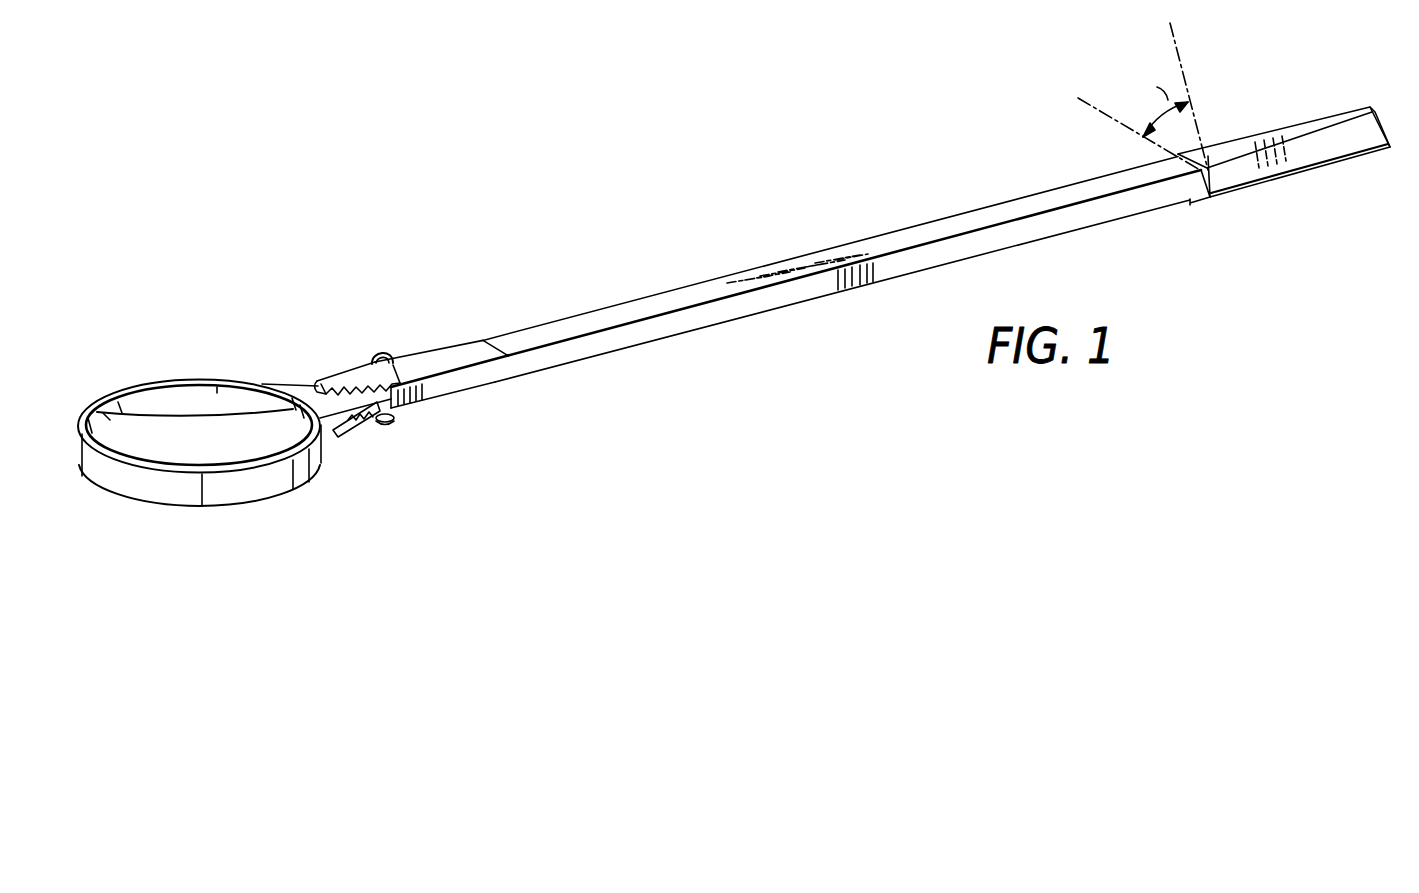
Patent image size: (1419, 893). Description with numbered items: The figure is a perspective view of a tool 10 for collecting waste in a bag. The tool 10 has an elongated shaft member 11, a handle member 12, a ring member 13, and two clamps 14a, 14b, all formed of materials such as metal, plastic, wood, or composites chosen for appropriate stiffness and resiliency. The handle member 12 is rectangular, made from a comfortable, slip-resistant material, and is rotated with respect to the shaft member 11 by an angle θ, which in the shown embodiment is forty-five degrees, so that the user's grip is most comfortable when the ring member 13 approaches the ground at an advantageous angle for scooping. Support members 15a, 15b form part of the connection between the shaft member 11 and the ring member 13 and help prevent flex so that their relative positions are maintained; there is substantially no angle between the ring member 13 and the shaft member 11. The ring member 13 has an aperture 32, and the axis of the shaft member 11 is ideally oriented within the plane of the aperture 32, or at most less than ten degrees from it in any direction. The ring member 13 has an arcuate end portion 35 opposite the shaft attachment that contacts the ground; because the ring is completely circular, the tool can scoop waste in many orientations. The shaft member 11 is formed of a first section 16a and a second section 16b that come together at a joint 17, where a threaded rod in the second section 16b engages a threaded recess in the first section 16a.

The tool 10 is at (855, 307).
The elongated shaft member 11 is at (727, 287).
The handle member 12 is at (1300, 140).
The ring member 13 is at (191, 397).
The clamp 14a is at (378, 353).
The clamp 14b is at (394, 426).
The support member 15a is at (284, 380).
The support member 15b is at (342, 428).
The first section 16a is at (457, 357).
The second section 16b is at (638, 308).
The joint 17 is at (508, 357).
The aperture 32 is at (182, 445).
The end portion 35 is at (82, 468).